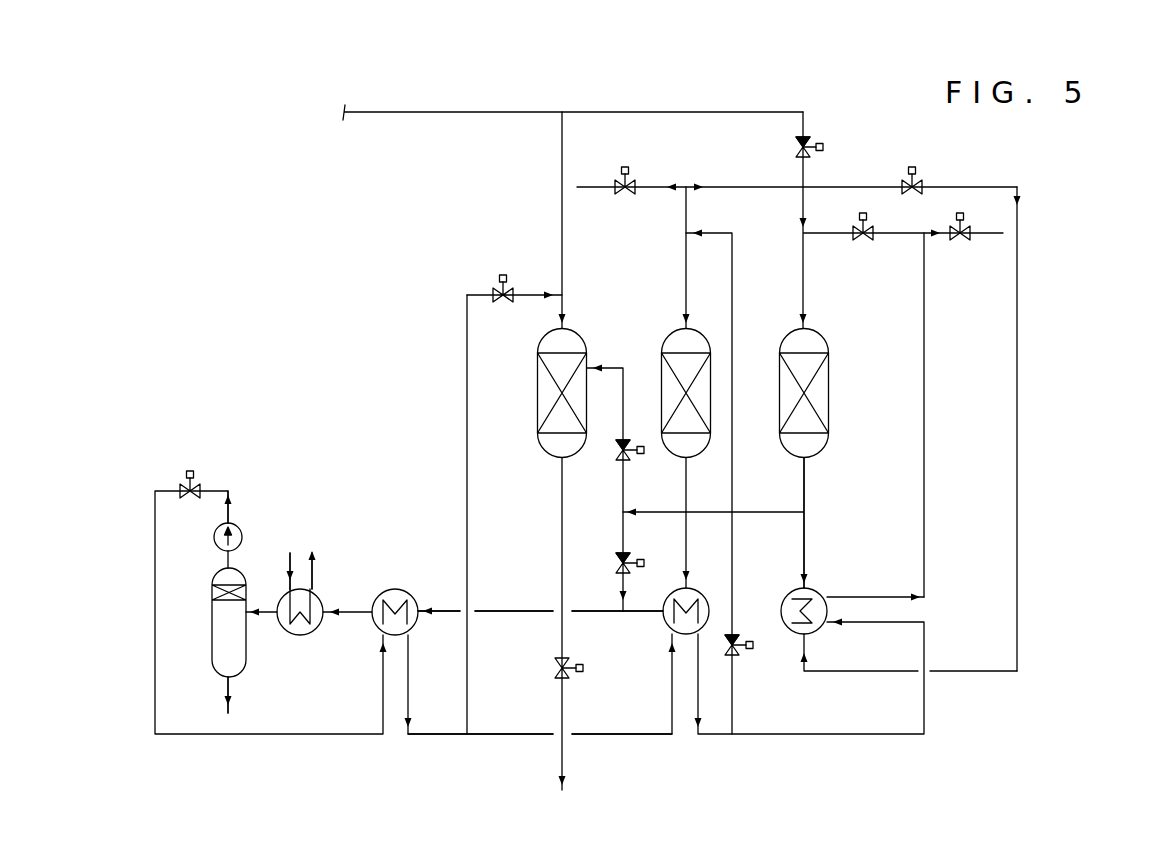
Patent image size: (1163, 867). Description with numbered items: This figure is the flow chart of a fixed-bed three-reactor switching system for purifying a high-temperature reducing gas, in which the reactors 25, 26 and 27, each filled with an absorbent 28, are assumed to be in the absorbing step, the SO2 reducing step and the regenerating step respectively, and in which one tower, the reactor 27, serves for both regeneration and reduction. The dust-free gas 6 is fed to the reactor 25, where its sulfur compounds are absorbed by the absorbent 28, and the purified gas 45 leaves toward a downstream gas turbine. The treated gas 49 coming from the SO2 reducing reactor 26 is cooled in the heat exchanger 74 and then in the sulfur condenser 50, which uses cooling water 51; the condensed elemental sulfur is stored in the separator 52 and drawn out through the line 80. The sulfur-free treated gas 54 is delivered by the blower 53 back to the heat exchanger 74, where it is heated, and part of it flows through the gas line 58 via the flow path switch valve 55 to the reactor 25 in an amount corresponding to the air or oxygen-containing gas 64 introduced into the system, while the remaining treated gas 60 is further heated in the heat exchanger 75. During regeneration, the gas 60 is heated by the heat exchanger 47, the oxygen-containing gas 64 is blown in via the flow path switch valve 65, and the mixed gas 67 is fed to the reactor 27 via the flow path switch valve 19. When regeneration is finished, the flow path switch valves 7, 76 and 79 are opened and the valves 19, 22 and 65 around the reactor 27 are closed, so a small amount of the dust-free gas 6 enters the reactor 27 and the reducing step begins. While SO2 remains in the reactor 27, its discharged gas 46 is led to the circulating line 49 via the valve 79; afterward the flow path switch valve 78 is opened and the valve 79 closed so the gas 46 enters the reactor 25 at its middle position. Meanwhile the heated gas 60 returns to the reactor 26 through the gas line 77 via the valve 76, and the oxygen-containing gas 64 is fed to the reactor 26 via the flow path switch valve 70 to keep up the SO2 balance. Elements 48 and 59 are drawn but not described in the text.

The dust-free gas 6 is at (430, 112).
The flow path switch valve 7 is at (823, 147).
The flow path switch valve 70 is at (625, 167).
The air or oxygen-containing gas 64 is at (593, 190).
The flow path switch valve 22 is at (912, 167).
The line 48 is at (1000, 187).
The flow path switch valve 19 is at (866, 217).
The flow path switch valve 65 is at (960, 213).
The mixed gas 67 is at (924, 410).
The flow path switch valve 55 is at (503, 275).
The gas line 58 is at (467, 478).
The reactor 25 is at (585, 340).
The reactor 26 is at (694, 342).
The reactor 27 is at (811, 340).
The absorbent 28 is at (549, 397).
The flow path switch valve 78 is at (644, 453).
The flow path switch valve 79 is at (643, 562).
The discharged gas 46 is at (805, 495).
The gas line 77 is at (732, 550).
The flow path switch valve 76 is at (750, 641).
The treated gas 49 is at (497, 611).
The heat exchanger 75 is at (667, 620).
The heat exchanger 47 is at (790, 628).
The purified gas 45 is at (565, 757).
The treated gas 60 is at (520, 735).
The valve 59 is at (190, 471).
The treated gas 54 is at (228, 491).
The blower 53 is at (216, 542).
The separator 52 is at (220, 630).
The cooling water 51 is at (290, 565).
The sulfur condenser 50 is at (290, 635).
The heat exchanger 74 is at (372, 622).
The line 80 is at (226, 694).